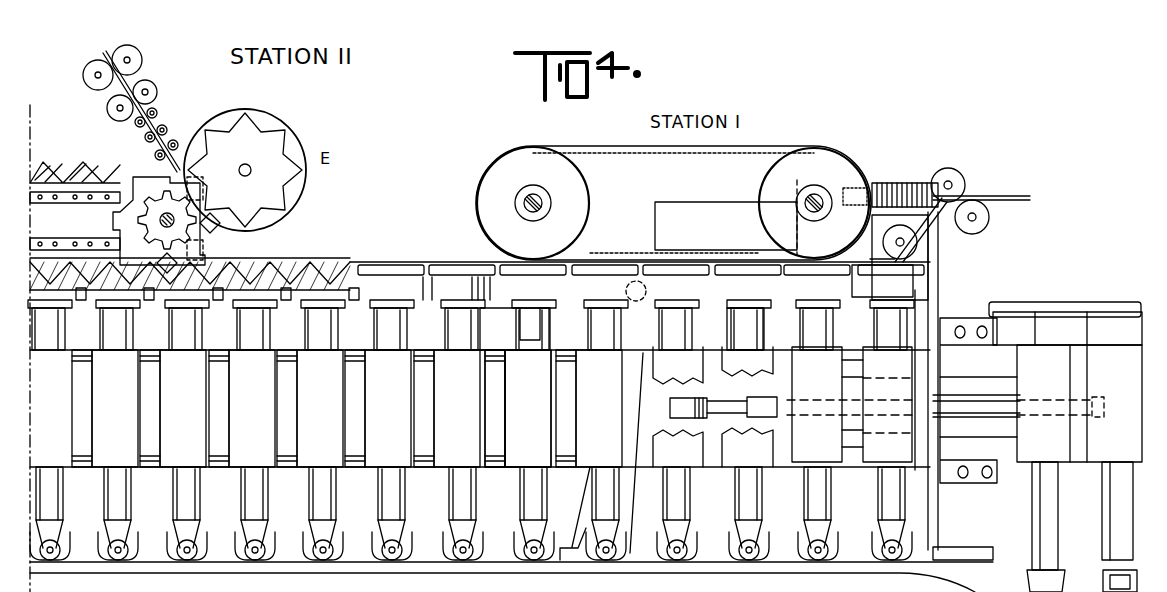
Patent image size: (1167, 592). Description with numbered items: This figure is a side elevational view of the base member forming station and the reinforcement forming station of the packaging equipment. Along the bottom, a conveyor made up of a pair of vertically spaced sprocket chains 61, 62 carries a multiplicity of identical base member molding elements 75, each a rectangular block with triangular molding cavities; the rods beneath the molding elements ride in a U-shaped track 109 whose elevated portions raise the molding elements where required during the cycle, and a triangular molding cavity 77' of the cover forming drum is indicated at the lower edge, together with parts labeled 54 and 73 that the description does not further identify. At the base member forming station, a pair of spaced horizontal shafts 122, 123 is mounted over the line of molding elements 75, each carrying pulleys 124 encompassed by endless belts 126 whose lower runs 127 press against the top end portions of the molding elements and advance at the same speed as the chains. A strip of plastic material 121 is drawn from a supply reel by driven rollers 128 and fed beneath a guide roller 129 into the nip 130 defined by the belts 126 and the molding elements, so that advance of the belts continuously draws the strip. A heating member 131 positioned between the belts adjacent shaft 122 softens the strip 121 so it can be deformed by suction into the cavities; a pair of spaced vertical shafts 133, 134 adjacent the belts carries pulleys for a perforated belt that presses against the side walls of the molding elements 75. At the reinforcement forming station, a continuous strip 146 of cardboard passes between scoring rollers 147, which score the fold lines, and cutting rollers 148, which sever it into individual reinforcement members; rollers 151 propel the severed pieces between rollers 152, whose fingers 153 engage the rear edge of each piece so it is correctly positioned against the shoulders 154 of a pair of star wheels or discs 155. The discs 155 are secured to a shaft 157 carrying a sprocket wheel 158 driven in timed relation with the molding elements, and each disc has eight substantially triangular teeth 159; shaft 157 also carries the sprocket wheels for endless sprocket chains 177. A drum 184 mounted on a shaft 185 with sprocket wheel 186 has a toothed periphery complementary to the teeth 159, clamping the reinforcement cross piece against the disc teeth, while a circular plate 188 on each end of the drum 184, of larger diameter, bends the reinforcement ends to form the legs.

The strip 146 is at (105, 57).
The scoring rollers 147 is at (84, 82).
The cutting rollers 148 is at (160, 100).
The rollers 151 is at (155, 130).
The rollers 152 is at (170, 143).
The fingers 153 is at (160, 153).
The teeth 159 is at (133, 177).
The sprocket wheel 158 is at (182, 160).
The shaft 185 is at (247, 125).
The drum 184 is at (270, 193).
The circular plate 188 is at (297, 152).
The sprocket wheel 186 is at (290, 172).
The shoulders 154 is at (200, 187).
The shaft 157 is at (190, 230).
The star wheels or discs 155 is at (125, 222).
The endless sprocket chains 177 is at (57, 240).
The pulleys 124 is at (500, 180).
The horizontal shaft 123 is at (513, 203).
The endless belts 126 is at (622, 150).
The lower runs 127 is at (618, 252).
The heating member 131 is at (688, 207).
The horizontal shaft 122 is at (777, 187).
The nip 130 is at (852, 242).
The knurled roller 73 is at (893, 187).
The driven rollers 128 is at (953, 175).
The strip of plastic material 121 is at (1020, 184).
The guide roller 129 is at (913, 247).
The base member molding elements 75 is at (917, 285).
The vertical shaft 134 is at (527, 322).
The vertical shaft 133 is at (747, 322).
The sprocket chain 61 is at (503, 358).
The sprocket chain 62 is at (500, 453).
The conveyor 54 is at (350, 588).
The U-shaped track 109 is at (576, 572).
The triangular molding cavity 77' is at (774, 584).